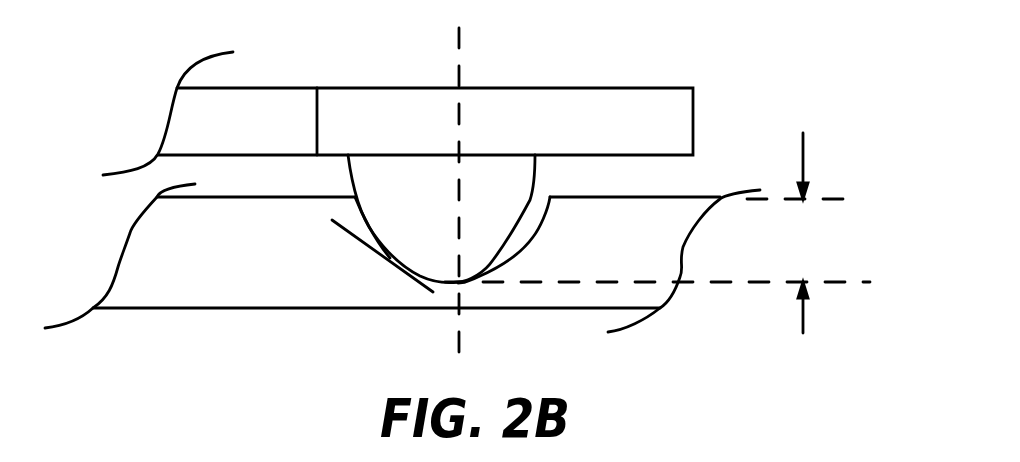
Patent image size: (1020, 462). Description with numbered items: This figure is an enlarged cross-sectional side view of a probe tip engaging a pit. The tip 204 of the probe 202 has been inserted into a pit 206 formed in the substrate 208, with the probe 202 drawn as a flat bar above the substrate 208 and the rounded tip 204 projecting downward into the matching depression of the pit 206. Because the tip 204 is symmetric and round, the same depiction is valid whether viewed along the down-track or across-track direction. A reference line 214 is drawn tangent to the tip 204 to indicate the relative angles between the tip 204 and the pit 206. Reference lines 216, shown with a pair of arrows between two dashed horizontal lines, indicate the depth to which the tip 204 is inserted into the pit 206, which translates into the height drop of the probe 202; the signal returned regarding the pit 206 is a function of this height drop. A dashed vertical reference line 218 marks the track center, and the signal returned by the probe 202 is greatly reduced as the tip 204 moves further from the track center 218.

The probe 202 is at (635, 88).
The tip 204 is at (350, 186).
The pit 206 is at (538, 232).
The substrate 208 is at (163, 308).
The reference line 214 is at (367, 247).
The reference lines 216 is at (803, 163).
The track center reference line 218 is at (460, 68).